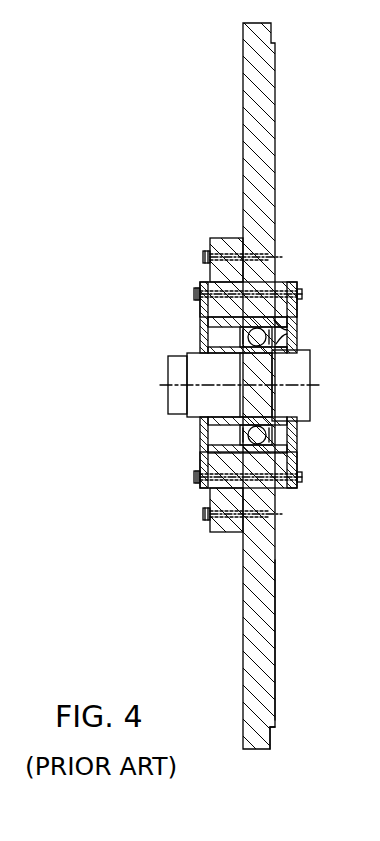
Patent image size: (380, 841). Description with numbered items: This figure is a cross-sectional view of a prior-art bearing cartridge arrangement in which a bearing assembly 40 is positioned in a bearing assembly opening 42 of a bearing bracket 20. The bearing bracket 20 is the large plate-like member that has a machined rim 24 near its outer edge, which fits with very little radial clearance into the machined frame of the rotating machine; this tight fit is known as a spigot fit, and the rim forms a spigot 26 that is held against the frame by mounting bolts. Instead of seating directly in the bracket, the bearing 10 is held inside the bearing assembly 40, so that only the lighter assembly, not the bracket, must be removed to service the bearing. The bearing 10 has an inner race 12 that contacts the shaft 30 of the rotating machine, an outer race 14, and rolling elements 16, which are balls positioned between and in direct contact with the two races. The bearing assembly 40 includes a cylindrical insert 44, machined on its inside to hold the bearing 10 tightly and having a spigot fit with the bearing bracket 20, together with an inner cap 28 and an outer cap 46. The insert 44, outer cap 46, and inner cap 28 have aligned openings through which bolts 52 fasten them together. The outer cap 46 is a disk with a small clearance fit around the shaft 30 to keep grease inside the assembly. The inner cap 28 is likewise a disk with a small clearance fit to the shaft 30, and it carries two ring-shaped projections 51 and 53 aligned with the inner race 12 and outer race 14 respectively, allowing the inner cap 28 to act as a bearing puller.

The bearing 10 is at (218, 333).
The inner race 12 is at (228, 336).
The outer race 14 is at (205, 324).
The rolling elements 16 is at (276, 356).
The bearing bracket 20 is at (243, 628).
The machined rim 24 is at (275, 738).
The spigot 26 is at (276, 656).
The inner cap 28 is at (297, 448).
The shaft 30 is at (168, 400).
The bearing assembly 40 is at (242, 374).
The bearing assembly opening 42 is at (274, 284).
The cylindrical insert 44 is at (208, 503).
The outer cap 46 is at (201, 444).
The ring-shaped projection 51 is at (286, 336).
The bolts 52 is at (195, 291).
The ring-shaped projection 53 is at (285, 330).